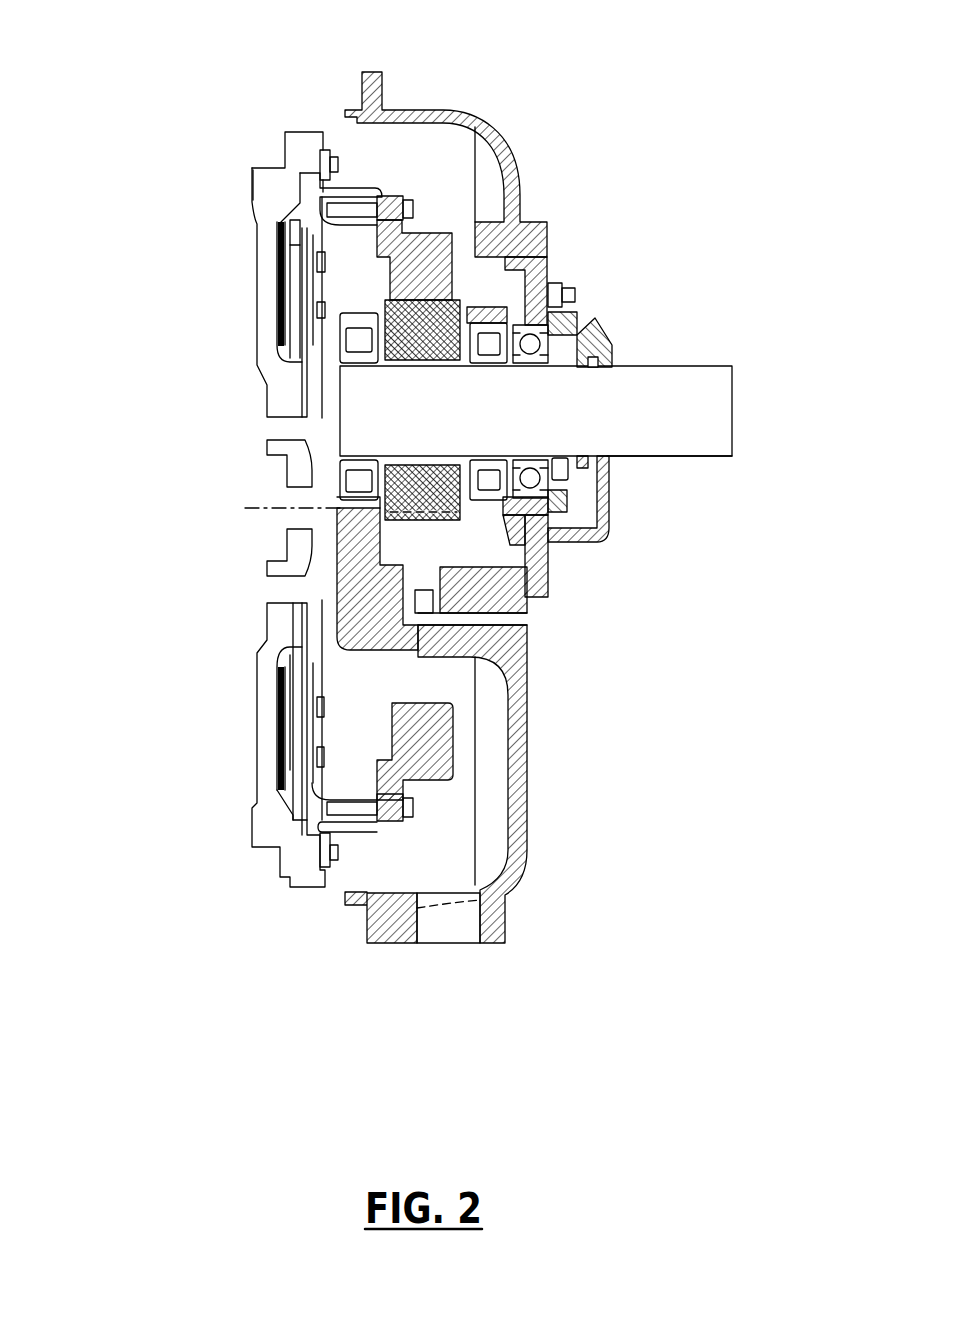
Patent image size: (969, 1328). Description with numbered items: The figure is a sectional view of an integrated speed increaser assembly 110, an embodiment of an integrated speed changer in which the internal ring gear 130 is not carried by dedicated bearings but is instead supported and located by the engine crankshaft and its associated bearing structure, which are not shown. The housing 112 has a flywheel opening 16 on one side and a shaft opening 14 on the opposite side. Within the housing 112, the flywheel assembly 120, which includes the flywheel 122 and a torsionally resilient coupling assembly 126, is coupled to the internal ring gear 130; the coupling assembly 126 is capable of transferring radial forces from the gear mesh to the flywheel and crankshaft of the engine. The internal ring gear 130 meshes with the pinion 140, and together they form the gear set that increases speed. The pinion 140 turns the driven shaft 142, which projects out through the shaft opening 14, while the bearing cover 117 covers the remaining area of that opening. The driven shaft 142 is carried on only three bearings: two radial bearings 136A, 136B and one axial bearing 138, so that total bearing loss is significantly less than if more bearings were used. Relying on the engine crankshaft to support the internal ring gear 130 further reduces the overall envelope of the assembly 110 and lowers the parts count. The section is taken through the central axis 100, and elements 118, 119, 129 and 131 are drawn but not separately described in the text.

The shaft opening 14 is at (752, 283).
The flywheel opening 16 is at (130, 115).
The central axis 100 is at (255, 505).
The integrated speed increaser assembly 110 is at (198, 78).
The housing 112 is at (442, 110).
The bearing cover 117 is at (590, 335).
The bearing carrier 118 is at (470, 298).
The hub 119 is at (340, 591).
The flywheel assembly 120 is at (380, 57).
The flywheel 122 is at (257, 284).
The torsionally resilient coupling assembly 126 is at (289, 172).
The bolt 129 is at (522, 620).
The internal ring gear 130 is at (435, 790).
The housing flange 131 is at (443, 927).
The radial bearing 136A is at (472, 294).
The radial bearing 136B is at (505, 520).
The axial bearing 138 is at (553, 477).
The pinion 140 is at (450, 628).
The driven shaft 142 is at (658, 456).